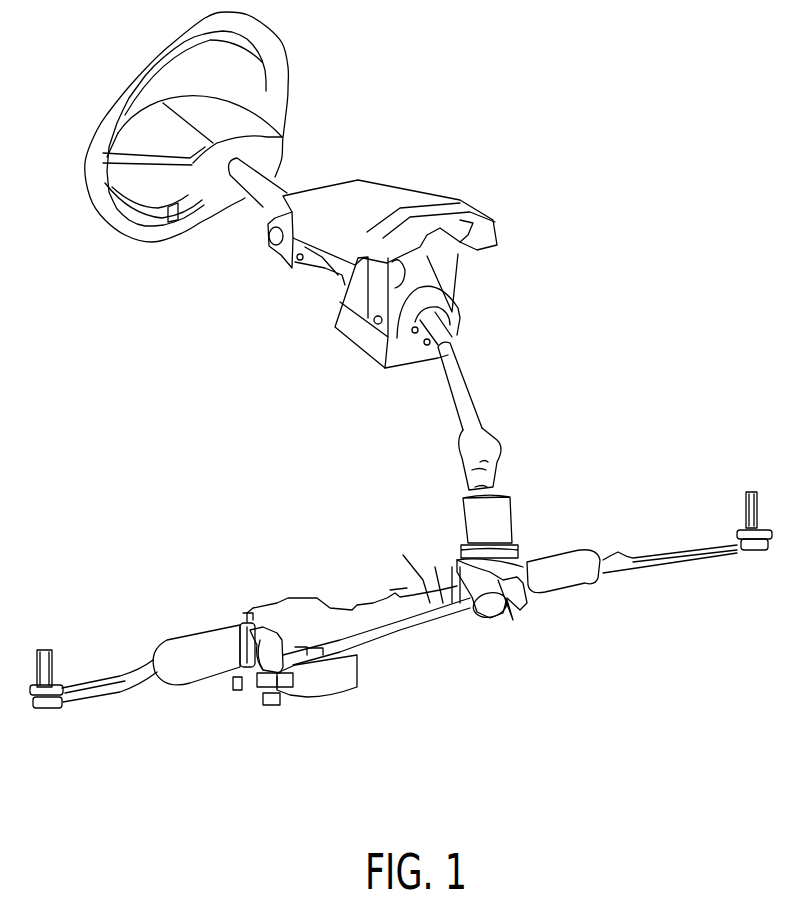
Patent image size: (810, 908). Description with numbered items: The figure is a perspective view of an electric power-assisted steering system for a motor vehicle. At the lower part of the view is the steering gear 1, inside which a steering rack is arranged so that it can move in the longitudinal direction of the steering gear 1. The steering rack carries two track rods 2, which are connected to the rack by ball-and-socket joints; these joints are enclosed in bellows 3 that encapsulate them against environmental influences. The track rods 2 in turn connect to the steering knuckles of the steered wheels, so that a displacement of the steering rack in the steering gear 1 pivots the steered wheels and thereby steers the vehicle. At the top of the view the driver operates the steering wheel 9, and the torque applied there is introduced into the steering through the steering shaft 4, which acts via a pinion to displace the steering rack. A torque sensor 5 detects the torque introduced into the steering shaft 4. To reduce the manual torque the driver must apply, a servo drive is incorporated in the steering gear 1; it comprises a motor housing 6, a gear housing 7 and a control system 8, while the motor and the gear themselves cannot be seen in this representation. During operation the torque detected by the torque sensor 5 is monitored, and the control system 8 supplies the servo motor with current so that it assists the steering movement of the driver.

The steering gear 1 is at (387, 613).
The track rods 2 is at (102, 685).
The bellows 3 is at (183, 682).
The steering shaft 4 is at (460, 387).
The torque sensor 5 is at (493, 518).
The motor housing 6 is at (355, 607).
The gear housing 7 is at (280, 600).
The control system 8 is at (333, 687).
The steering wheel 9 is at (282, 53).